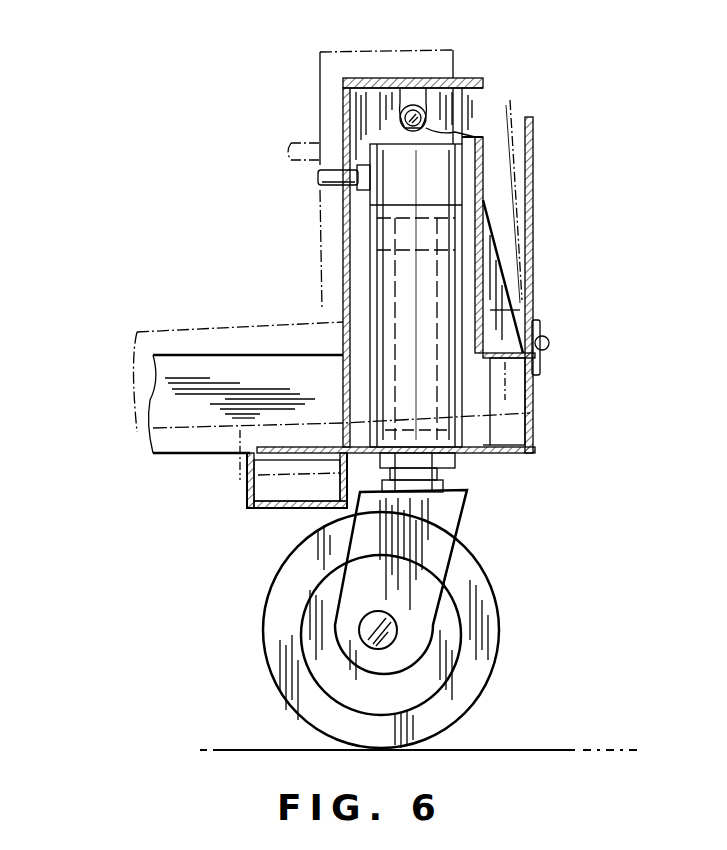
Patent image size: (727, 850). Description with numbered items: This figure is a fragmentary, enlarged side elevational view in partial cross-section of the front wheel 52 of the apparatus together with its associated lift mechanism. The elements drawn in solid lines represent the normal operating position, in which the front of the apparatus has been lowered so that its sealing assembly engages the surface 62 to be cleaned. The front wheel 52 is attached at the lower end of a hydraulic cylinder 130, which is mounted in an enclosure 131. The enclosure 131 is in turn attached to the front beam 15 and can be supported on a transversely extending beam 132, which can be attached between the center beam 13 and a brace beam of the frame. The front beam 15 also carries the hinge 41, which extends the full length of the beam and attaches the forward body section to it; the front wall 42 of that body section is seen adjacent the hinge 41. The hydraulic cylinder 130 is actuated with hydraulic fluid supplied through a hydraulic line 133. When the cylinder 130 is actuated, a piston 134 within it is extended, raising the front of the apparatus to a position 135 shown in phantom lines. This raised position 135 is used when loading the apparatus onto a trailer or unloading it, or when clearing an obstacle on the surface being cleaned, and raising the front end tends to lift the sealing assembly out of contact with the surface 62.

The center beam 13 is at (165, 397).
The front beam 15 is at (535, 453).
The hinge 41 is at (549, 341).
The front wall 42 is at (533, 262).
The front wheel 52 is at (488, 637).
The surface to be cleaned 62 is at (520, 748).
The hydraulic cylinder 130 is at (372, 283).
The enclosure 131 is at (466, 75).
The transversely extending beam 132 is at (245, 488).
The hydraulic line 133 is at (326, 187).
The piston 134 is at (485, 220).
The raised position 135 is at (318, 79).